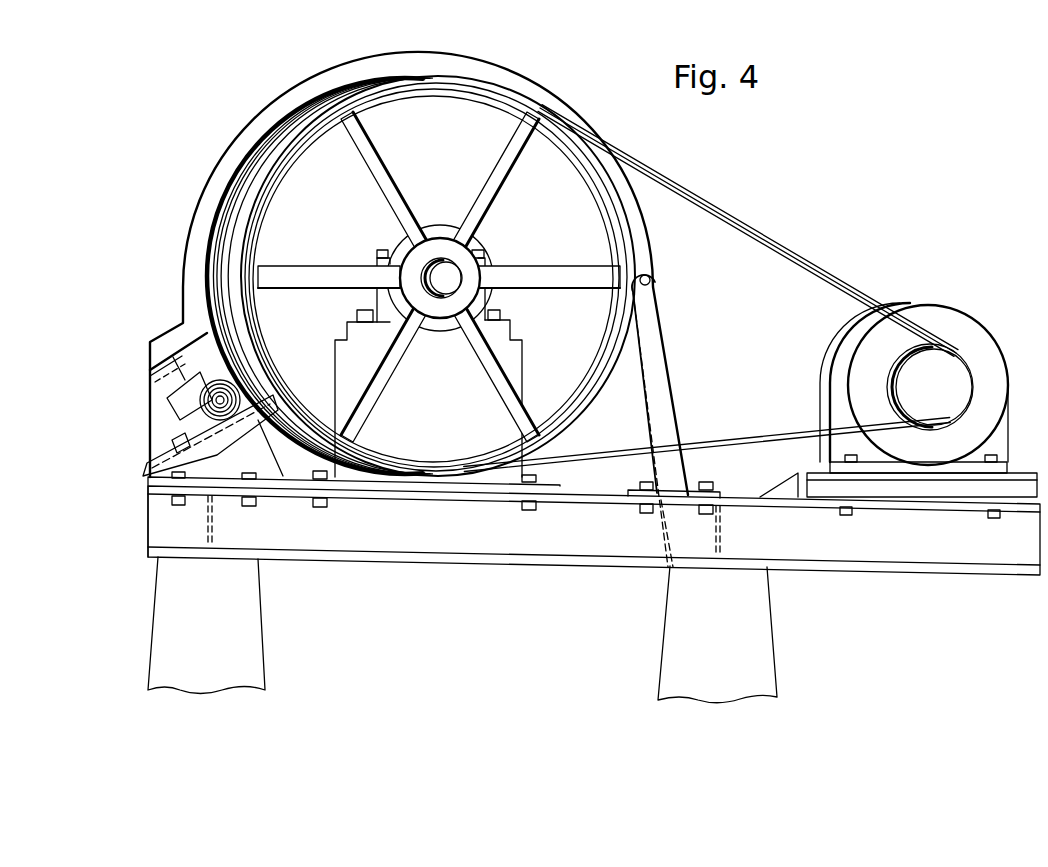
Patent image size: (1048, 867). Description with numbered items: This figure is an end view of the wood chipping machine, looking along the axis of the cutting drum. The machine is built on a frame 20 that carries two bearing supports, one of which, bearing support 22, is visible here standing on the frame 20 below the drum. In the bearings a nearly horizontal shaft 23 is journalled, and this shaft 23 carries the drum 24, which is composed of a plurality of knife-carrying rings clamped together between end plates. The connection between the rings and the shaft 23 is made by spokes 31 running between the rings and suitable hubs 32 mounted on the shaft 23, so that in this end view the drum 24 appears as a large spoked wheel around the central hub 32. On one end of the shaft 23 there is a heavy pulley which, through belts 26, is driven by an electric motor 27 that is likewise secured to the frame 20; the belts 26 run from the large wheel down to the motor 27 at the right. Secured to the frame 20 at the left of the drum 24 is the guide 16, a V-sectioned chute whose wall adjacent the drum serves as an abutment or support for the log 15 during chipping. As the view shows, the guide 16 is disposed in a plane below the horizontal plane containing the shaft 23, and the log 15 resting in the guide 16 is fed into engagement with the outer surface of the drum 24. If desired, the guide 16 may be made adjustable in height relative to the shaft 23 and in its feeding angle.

The log 15 is at (200, 402).
The guide 16 is at (177, 412).
The frame 20 is at (562, 556).
The bearing support 22 is at (510, 370).
The shaft 23 is at (453, 268).
The drum 24 is at (210, 237).
The belts 26 is at (775, 242).
The electric motor 27 is at (988, 388).
The spokes 31 is at (375, 167).
The hubs 32 is at (433, 238).